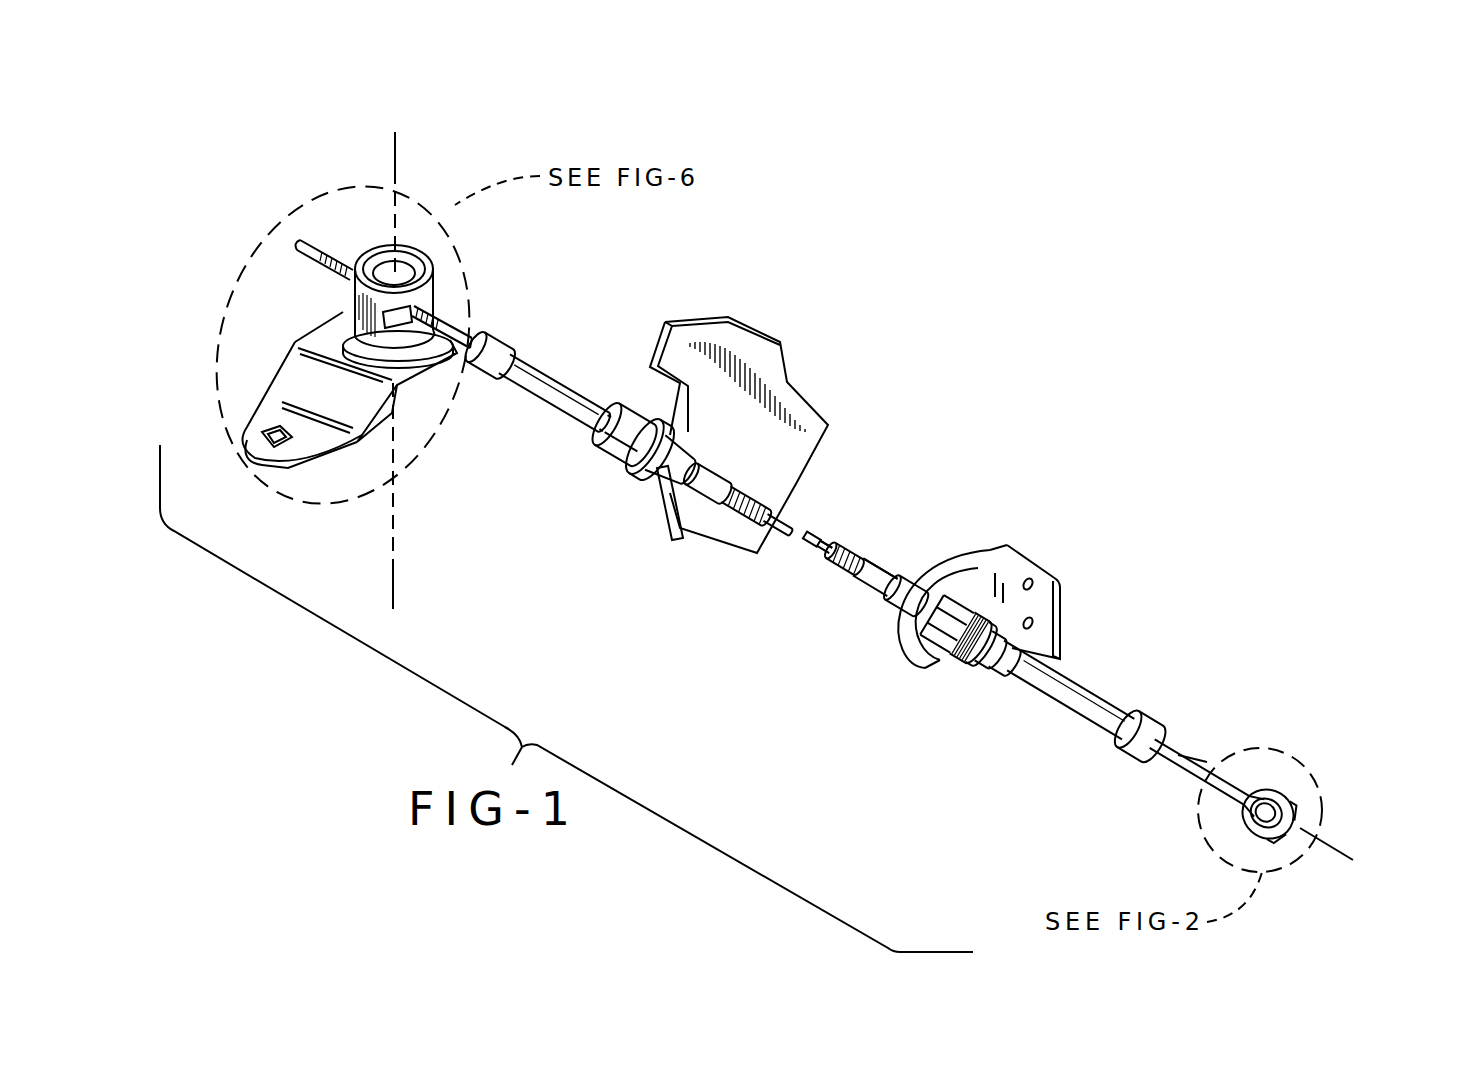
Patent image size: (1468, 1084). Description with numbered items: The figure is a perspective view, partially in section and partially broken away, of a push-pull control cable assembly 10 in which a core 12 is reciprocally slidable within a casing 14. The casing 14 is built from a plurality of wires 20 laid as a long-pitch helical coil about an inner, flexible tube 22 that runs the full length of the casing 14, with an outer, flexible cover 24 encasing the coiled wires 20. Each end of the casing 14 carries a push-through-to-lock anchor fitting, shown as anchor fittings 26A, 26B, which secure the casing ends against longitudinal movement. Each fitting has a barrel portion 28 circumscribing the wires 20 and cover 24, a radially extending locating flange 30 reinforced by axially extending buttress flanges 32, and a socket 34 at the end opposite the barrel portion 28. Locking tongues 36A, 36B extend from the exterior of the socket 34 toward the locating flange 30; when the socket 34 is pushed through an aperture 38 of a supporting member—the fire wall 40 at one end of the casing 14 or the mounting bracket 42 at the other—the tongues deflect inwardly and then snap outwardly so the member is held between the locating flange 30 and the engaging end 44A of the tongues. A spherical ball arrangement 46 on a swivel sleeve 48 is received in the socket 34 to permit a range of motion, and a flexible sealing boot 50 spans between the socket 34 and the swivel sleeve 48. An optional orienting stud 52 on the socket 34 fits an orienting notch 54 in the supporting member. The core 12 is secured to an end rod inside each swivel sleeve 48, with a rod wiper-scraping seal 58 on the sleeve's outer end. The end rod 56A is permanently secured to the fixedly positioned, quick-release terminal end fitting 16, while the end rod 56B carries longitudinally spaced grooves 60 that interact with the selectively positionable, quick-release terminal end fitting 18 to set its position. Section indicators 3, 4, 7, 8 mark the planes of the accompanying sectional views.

The push-pull control cable assembly 10 is at (834, 294).
The core 12 is at (808, 548).
The casing 14 is at (867, 588).
The fixedly positioned, quick-release terminal end fitting 16 is at (1273, 781).
The selectively positionable, quick-release terminal end fitting 18 is at (442, 256).
The wires 20 is at (835, 552).
The inner, flexible tube 22 is at (820, 540).
The outer, flexible cover 24 is at (868, 570).
The anchor fitting 26A is at (905, 562).
The anchor fitting 26B is at (652, 498).
The barrel portion 28 is at (678, 495).
The locating flange 30 is at (653, 478).
The buttress flanges 32 is at (705, 447).
The socket 34 is at (598, 452).
The locking tongue 36A is at (955, 662).
The locking tongue 36B is at (1013, 580).
The aperture 38 is at (932, 668).
The fire wall 40 is at (748, 342).
The mounting bracket 42 is at (1043, 567).
The engaging end 44A is at (940, 634).
The spherical ball arrangement 46 is at (985, 650).
The swivel sleeve 48 is at (567, 393).
The flexible sealing boot 50 is at (1012, 637).
The orienting stud 52 is at (660, 423).
The orienting notch 54 is at (965, 597).
The end rod 56A is at (1170, 743).
The end rod 56B is at (450, 335).
The rod wiper-scraping seal 58 is at (487, 357).
The grooves 60 is at (330, 247).
The section line 3- 3 is at (1178, 755).
The section line 4- 4 is at (1178, 755).
The section line 7- 7 is at (395, 132).
The section line 8- 8 is at (395, 170).